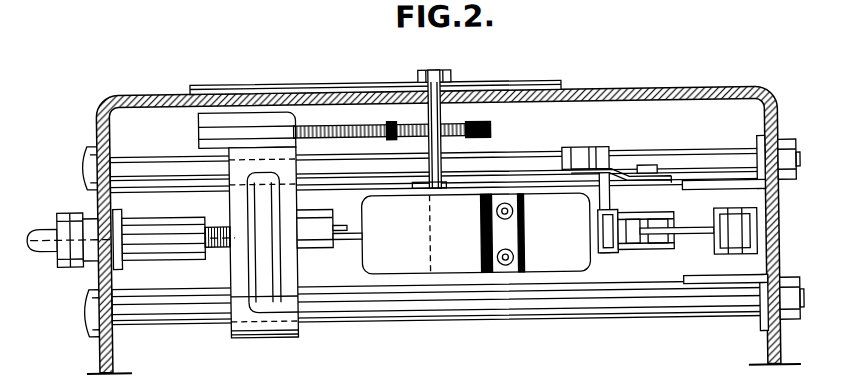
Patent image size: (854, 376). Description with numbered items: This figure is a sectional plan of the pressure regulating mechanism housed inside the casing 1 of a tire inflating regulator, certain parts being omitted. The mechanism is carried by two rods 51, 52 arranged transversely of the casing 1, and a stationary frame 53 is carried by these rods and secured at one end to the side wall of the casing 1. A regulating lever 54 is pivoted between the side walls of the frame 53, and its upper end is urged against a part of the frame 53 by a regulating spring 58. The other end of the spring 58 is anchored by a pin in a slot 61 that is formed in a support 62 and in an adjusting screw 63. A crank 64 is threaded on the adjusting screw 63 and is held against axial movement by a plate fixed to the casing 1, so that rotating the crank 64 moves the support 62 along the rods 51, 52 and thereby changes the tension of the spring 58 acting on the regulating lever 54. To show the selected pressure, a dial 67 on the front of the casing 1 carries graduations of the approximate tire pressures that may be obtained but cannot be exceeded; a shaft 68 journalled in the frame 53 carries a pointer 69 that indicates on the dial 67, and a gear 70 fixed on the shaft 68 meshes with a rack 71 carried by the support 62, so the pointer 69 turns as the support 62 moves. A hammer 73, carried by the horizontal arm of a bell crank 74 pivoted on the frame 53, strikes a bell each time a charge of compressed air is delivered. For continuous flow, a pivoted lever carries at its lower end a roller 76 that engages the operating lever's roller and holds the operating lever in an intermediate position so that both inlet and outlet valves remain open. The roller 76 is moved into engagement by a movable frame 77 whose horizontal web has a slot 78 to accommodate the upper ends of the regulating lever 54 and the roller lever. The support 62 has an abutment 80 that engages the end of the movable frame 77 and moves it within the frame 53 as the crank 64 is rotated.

The casing 1 is at (106, 96).
The rod 51 is at (140, 156).
The rod 52 is at (157, 319).
The frame 53 is at (779, 145).
The regulating lever 54 is at (645, 235).
The regulating spring 58 is at (608, 252).
The slot 61 is at (303, 235).
The support 62 is at (278, 328).
The adjusting screw 63 is at (217, 250).
The crank 64 is at (80, 208).
The dial 67 is at (600, 149).
The shaft 68 is at (474, 84).
The pointer 69 is at (538, 82).
The gear 70 is at (512, 83).
The rack 71 is at (315, 125).
The hammer 73 is at (622, 168).
The bell crank 74 is at (655, 175).
The roller 76 is at (757, 231).
The movable frame 77 is at (476, 233).
The slot 78 is at (620, 256).
The abutment 80 is at (297, 285).